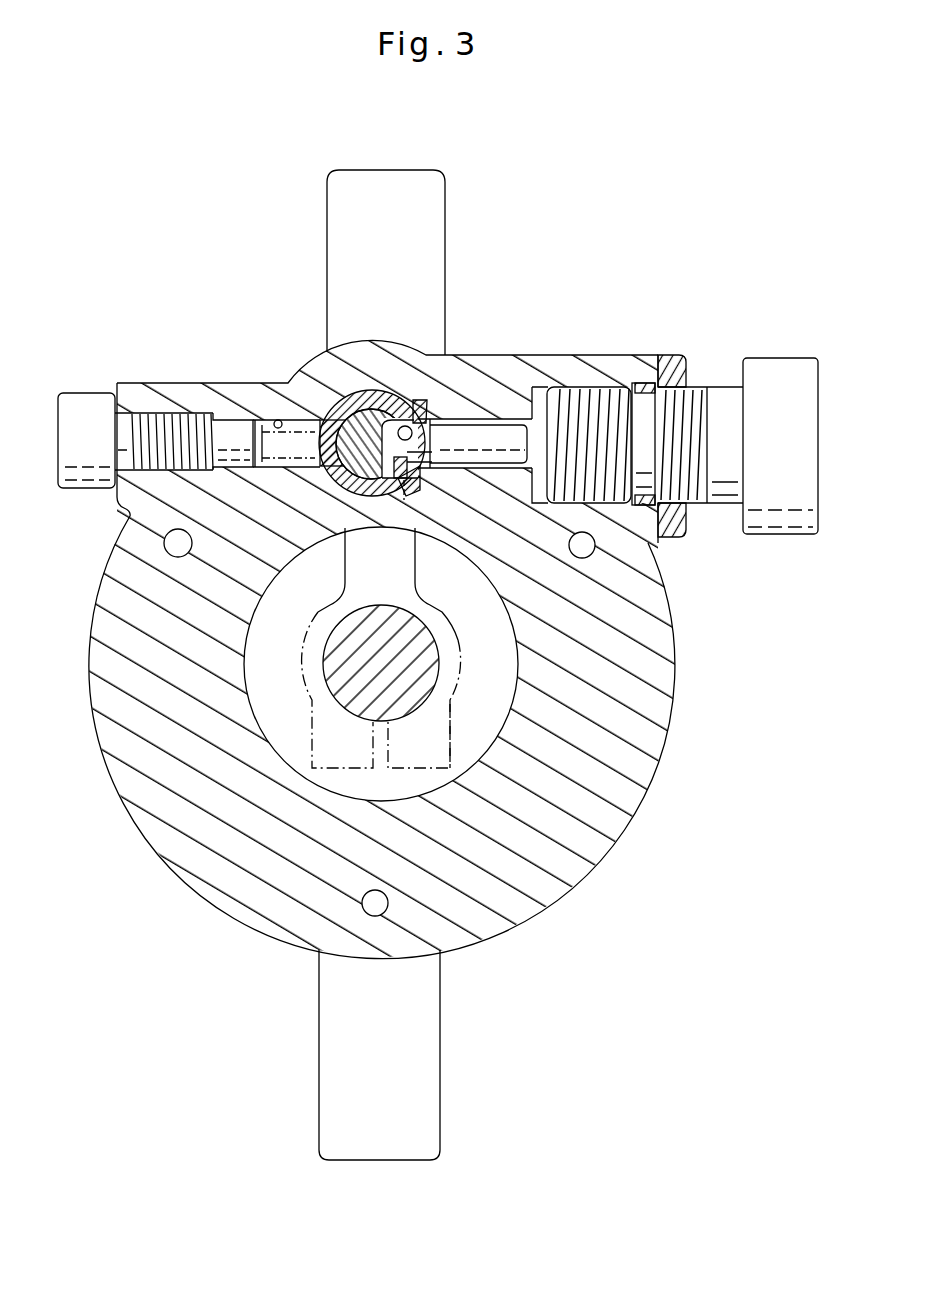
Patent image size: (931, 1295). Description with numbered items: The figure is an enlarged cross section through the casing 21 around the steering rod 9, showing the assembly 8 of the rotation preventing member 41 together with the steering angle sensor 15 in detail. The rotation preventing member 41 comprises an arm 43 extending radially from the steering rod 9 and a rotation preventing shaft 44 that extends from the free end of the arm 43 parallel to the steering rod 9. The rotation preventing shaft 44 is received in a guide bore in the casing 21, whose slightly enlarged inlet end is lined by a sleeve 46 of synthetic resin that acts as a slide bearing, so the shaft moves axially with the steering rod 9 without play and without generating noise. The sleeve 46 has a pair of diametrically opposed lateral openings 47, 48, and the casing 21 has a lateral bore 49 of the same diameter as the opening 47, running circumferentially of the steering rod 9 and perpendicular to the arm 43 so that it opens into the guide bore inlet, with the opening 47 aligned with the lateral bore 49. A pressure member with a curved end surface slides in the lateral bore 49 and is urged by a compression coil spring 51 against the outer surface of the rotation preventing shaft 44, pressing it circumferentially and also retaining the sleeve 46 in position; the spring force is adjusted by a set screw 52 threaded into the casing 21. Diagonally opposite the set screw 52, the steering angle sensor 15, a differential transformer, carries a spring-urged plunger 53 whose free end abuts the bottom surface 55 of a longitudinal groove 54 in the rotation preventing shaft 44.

The valve assembly 8 is at (527, 314).
The steering rod 9 is at (323, 663).
The steering angle sensor 15 is at (770, 358).
The casing 21 is at (662, 745).
The rotation preventing member 41 is at (470, 668).
The arm 43 is at (418, 545).
The rotation preventing shaft 44 is at (382, 397).
The sleeve 46 is at (348, 397).
The opening 47 is at (327, 418).
The opening 48 is at (424, 412).
The lateral bore 49 is at (271, 416).
The compression coil spring 51 is at (297, 540).
The set screw 52 is at (80, 393).
The plunger 53 is at (405, 499).
The groove 54 is at (408, 413).
The bottom surface 55 is at (398, 497).